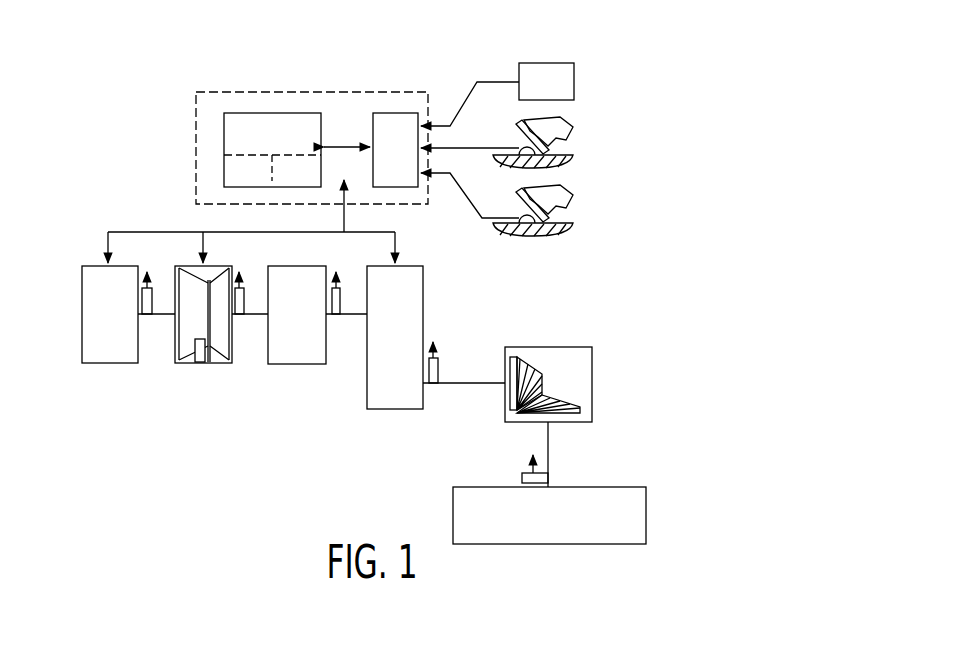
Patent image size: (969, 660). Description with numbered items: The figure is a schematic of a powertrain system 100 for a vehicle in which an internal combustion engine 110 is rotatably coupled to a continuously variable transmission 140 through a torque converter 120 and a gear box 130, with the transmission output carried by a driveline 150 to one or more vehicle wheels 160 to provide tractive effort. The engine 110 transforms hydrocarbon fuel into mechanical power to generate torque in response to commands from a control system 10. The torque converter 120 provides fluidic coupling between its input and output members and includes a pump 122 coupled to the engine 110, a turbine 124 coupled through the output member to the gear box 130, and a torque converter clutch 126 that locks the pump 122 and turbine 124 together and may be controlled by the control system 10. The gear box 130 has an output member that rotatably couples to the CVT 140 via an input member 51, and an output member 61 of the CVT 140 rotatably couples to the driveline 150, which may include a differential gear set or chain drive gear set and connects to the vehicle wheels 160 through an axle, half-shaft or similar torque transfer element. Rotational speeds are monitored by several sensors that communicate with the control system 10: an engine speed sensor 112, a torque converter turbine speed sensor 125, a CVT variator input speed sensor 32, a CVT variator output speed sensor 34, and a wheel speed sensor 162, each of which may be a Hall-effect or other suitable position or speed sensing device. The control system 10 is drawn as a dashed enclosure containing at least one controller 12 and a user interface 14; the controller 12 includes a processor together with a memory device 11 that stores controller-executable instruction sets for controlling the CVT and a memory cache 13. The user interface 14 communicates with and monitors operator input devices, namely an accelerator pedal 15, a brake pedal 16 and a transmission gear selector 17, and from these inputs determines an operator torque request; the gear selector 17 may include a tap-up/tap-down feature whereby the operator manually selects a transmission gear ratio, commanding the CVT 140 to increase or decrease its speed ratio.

The powertrain system 100 is at (126, 158).
The control system 10 is at (228, 92).
The memory device 11 is at (310, 180).
The controller 12 is at (281, 118).
The memory cache 13 is at (230, 173).
The user interface 14 is at (405, 113).
The accelerator pedal 15 is at (520, 207).
The brake pedal 16 is at (520, 140).
The transmission gear selector 17 is at (574, 80).
The internal combustion engine 110 is at (80, 298).
The engine speed sensor 112 is at (153, 296).
The torque converter 120 is at (186, 349).
The pump 122 is at (193, 352).
The turbine 124 is at (226, 352).
The torque converter clutch 126 is at (200, 362).
The torque converter turbine speed sensor 125 is at (245, 300).
The gear box 130 is at (278, 366).
The CVT variator input speed sensor 32 is at (342, 300).
The input member 51 is at (355, 316).
The continuously variable transmission 140 is at (425, 292).
The CVT variator output speed sensor 34 is at (440, 360).
The output member 61 is at (445, 385).
The driveline 150 is at (595, 357).
The vehicle wheels 160 is at (648, 493).
The wheel speed sensor 162 is at (521, 475).